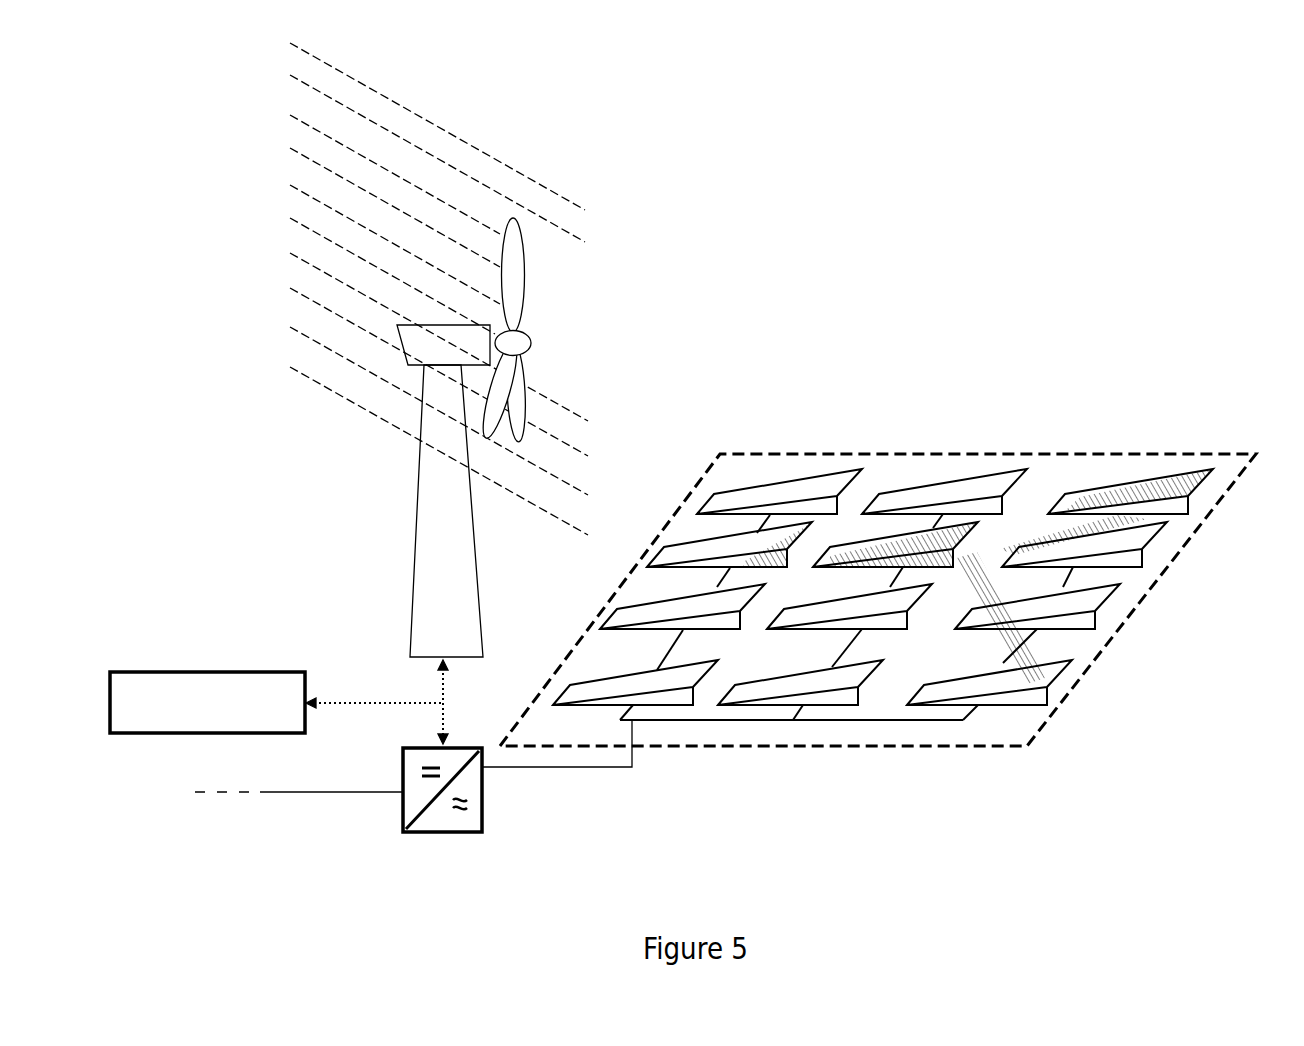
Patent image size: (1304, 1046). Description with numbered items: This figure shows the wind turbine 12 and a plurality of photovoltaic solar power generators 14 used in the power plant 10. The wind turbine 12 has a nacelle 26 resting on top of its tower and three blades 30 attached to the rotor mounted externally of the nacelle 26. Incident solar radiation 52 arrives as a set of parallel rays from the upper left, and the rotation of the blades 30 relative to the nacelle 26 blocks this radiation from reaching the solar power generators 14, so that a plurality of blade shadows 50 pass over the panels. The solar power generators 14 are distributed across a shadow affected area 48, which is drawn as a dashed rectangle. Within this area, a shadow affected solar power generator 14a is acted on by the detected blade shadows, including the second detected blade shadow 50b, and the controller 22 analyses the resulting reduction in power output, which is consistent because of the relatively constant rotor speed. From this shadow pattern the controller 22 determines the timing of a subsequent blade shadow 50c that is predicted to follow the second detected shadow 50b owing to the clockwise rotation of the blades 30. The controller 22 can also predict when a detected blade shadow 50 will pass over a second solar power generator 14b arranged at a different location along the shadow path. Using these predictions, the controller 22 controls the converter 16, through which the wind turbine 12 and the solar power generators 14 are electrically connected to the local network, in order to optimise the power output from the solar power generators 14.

The power plant 10 is at (931, 181).
The wind turbine 12 is at (503, 410).
The solar power generators 14 is at (962, 487).
The shadow affected solar power generator 14a is at (1100, 600).
The second solar power generator 14b is at (1143, 545).
The converter 16 is at (402, 827).
The controller 22 is at (205, 672).
The nacelle 26 is at (423, 355).
The blades 30 is at (525, 268).
The shadow affected area 48 is at (894, 527).
The blade shadows 50 is at (1183, 493).
The second detected blade shadow 50b is at (1042, 518).
The subsequent blade shadow 50c is at (820, 555).
The incident solar radiation 52 is at (293, 335).